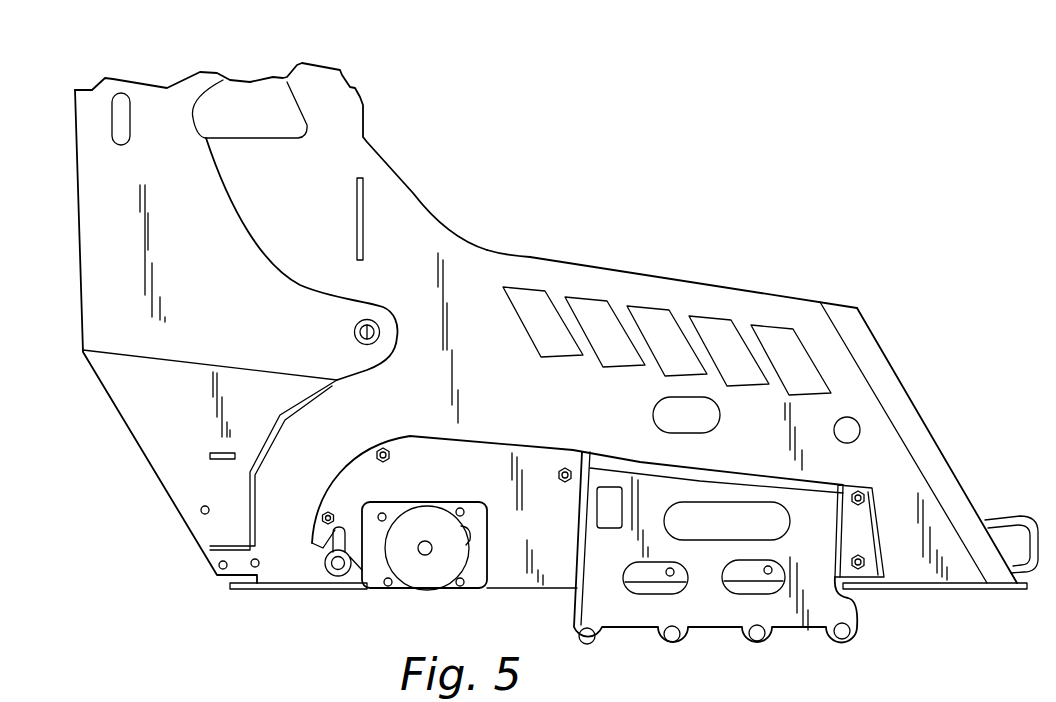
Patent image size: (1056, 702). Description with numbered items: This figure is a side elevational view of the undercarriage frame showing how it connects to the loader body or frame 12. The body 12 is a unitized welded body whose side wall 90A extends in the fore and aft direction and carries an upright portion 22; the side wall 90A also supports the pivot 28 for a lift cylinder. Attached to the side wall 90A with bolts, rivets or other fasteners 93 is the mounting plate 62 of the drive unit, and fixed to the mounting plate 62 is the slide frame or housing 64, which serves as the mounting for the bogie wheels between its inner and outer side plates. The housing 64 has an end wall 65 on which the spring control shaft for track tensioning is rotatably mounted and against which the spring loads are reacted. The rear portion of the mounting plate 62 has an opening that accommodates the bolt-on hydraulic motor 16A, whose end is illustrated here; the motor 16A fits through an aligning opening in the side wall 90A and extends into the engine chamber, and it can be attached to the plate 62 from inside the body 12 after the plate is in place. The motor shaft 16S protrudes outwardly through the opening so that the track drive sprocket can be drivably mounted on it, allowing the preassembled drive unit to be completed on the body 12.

The body or frame 12 is at (755, 280).
The upright portion 22 is at (205, 188).
The pivot 28 is at (357, 330).
The mounting plate 62 is at (413, 436).
The slide frame or housing 64 is at (636, 615).
The end wall 65 is at (570, 450).
The side wall 90A is at (470, 265).
The fasteners 93 is at (378, 452).
The hydraulic motor 16A is at (415, 522).
The motor shaft 16S is at (425, 555).